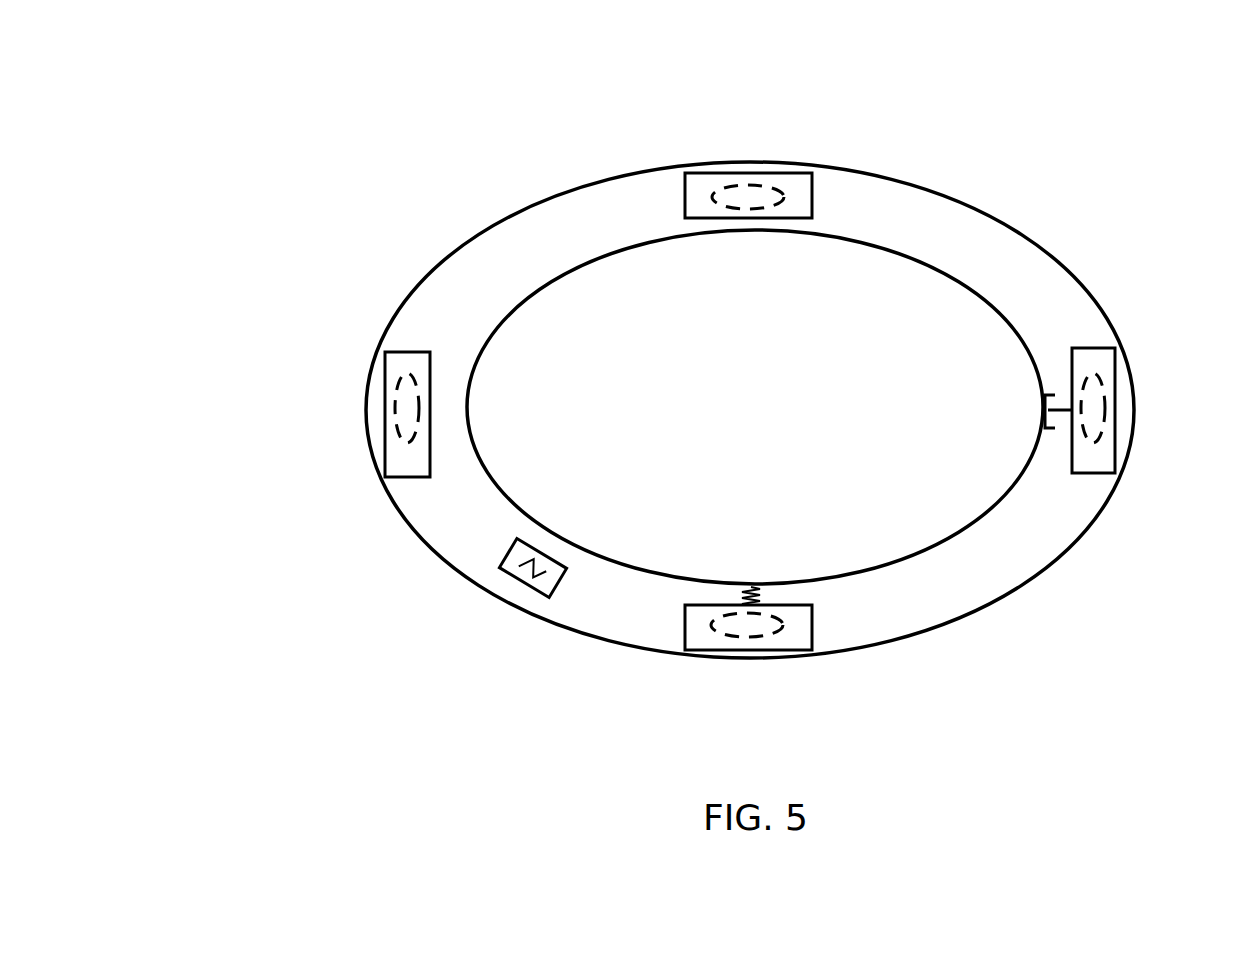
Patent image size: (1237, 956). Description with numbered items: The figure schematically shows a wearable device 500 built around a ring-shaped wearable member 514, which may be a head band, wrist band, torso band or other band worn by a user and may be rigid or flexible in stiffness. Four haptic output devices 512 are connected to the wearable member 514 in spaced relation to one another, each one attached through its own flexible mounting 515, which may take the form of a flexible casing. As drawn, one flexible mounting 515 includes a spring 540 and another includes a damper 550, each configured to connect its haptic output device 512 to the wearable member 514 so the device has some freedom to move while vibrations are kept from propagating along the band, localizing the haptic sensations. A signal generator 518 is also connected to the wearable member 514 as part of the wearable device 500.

The wearable device 500 is at (267, 143).
The haptic output device 512 is at (752, 184).
The wearable member 514 is at (496, 222).
The flexible mounting 515 is at (708, 173).
The signal generator 518 is at (523, 580).
The spring 540 is at (752, 586).
The damper 550 is at (1048, 392).